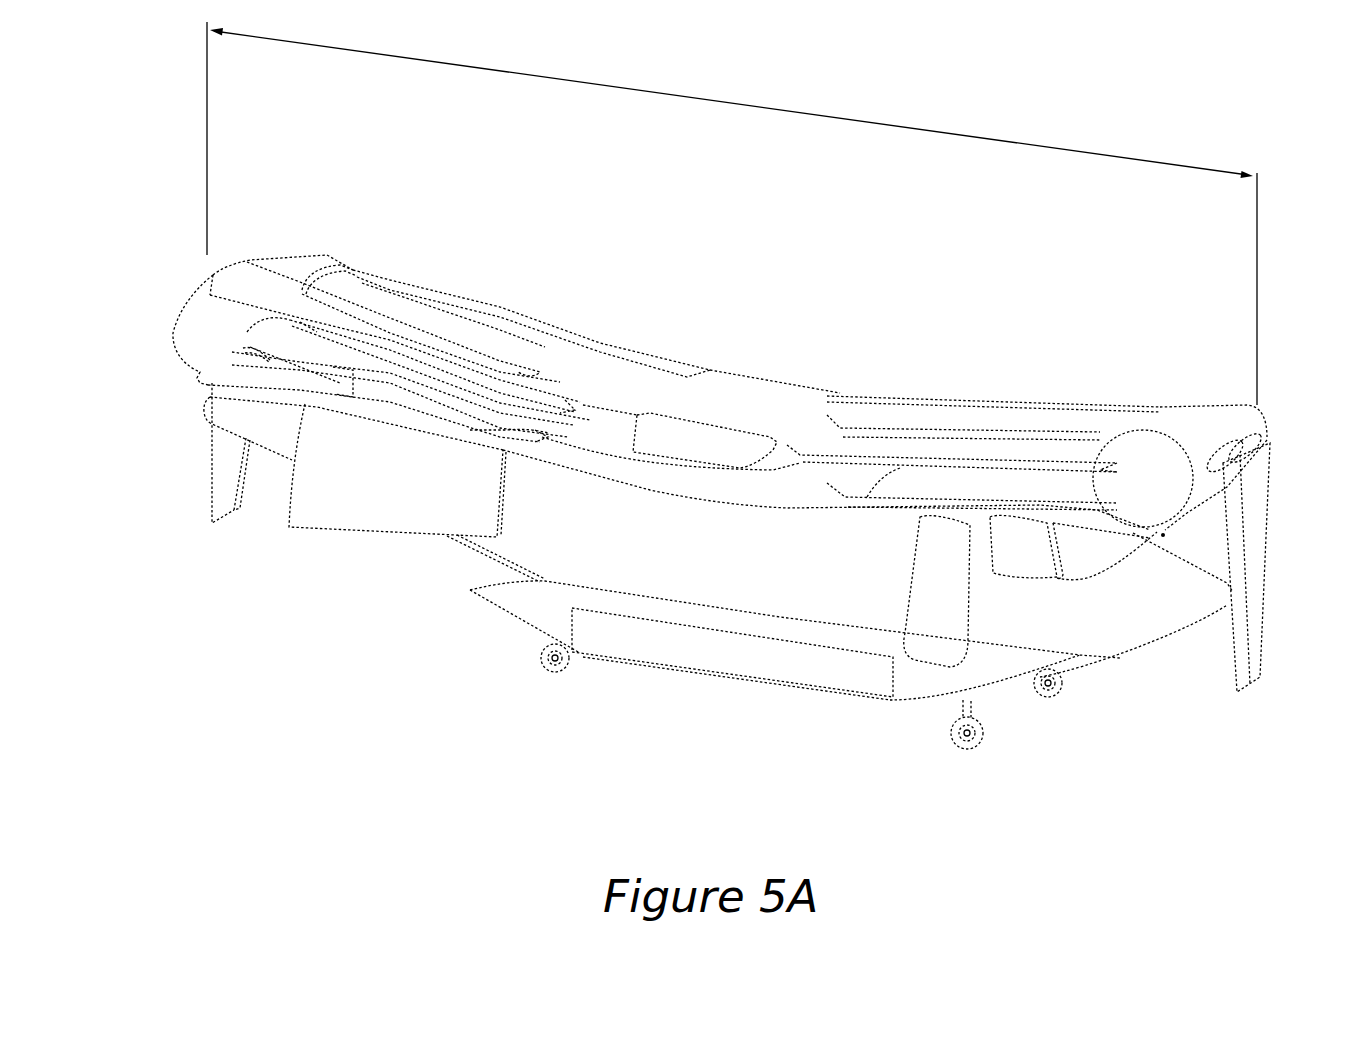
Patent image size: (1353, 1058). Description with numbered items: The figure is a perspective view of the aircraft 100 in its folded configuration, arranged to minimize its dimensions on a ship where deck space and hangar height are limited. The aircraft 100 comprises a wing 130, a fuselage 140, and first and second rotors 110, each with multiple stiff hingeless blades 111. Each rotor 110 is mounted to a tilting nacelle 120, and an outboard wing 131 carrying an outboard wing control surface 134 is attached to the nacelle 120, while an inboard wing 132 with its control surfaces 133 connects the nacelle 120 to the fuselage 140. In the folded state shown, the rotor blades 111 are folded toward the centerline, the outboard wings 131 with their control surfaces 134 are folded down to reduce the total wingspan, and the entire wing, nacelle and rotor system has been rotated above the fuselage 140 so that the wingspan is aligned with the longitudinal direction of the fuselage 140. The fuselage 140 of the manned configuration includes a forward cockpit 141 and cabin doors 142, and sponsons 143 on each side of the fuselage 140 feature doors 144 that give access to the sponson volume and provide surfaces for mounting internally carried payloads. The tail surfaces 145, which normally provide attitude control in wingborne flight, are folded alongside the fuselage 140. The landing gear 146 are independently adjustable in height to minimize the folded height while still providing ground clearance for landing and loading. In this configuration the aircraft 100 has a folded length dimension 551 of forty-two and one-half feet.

The aircraft 100 is at (180, 615).
The rotor 110 is at (150, 266).
The blades 111 is at (335, 393).
The tilting nacelle 120 is at (298, 252).
The wing 130 is at (840, 282).
The outboard wing 131 is at (205, 455).
The inboard wing 132 is at (757, 373).
The control surfaces 133 is at (601, 343).
The outboard wing control surface 134 is at (235, 512).
The fuselage 140 is at (820, 742).
The forward cockpit 141 is at (1140, 705).
The cabin doors 142 is at (905, 612).
The sponsons 143 is at (915, 710).
The doors 144 is at (722, 678).
The tail surfaces 145 is at (370, 530).
The landing gear 146 is at (550, 673).
The folded length dimension 551 is at (744, 106).